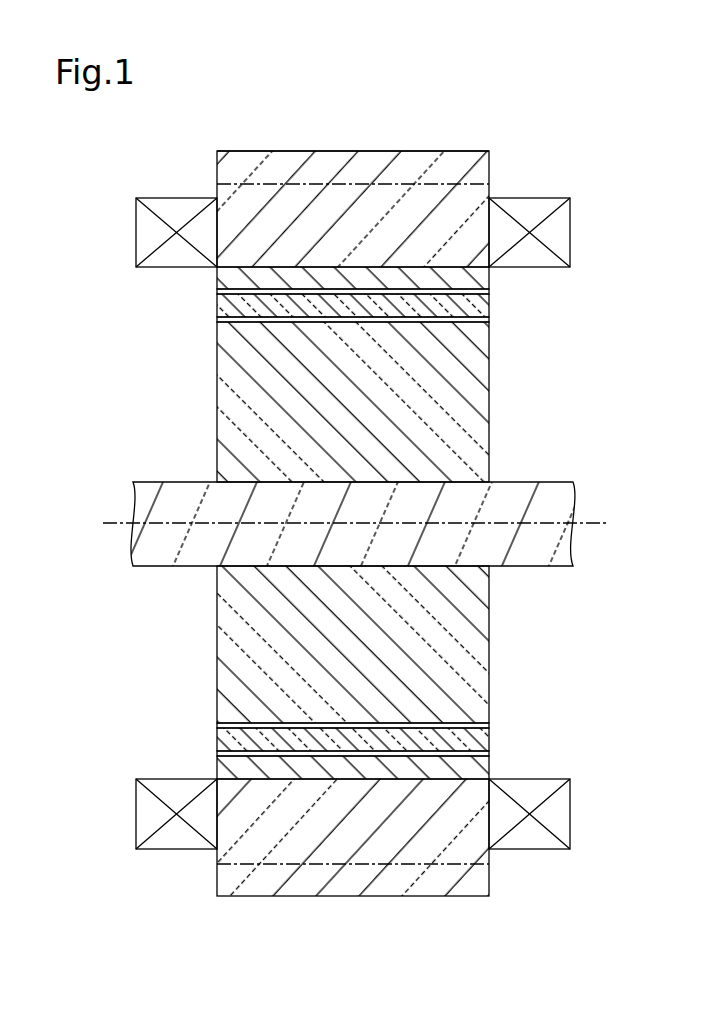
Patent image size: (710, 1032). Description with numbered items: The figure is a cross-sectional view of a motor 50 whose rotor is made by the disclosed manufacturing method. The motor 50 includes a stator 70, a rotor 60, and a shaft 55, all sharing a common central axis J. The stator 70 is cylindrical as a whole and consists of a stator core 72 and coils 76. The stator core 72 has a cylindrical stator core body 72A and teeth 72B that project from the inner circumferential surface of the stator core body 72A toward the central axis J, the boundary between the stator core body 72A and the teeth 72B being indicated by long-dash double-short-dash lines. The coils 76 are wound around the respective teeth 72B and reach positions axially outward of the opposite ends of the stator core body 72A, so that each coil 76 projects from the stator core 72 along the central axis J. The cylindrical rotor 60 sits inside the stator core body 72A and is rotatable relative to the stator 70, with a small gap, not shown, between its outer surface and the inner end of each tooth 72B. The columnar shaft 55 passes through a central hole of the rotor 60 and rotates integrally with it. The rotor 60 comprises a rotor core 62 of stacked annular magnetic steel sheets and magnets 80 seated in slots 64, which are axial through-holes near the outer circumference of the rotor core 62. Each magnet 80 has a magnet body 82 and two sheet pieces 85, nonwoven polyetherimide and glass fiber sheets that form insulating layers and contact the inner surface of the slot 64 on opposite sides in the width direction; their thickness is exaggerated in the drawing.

The motor 50 is at (602, 143).
The shaft 55 is at (527, 482).
The rotor 60 is at (516, 375).
The rotor core 62 is at (492, 402).
The slot 64 is at (486, 311).
The stator 70 is at (379, 130).
The stator core 72 is at (572, 87).
The stator core body 72A is at (468, 151).
The tooth 72B is at (489, 184).
The coil 76 is at (570, 225).
The magnet 80 is at (125, 280).
The magnet body 82 is at (217, 307).
The sheet piece 85 is at (217, 291).
The central axis J is at (364, 525).